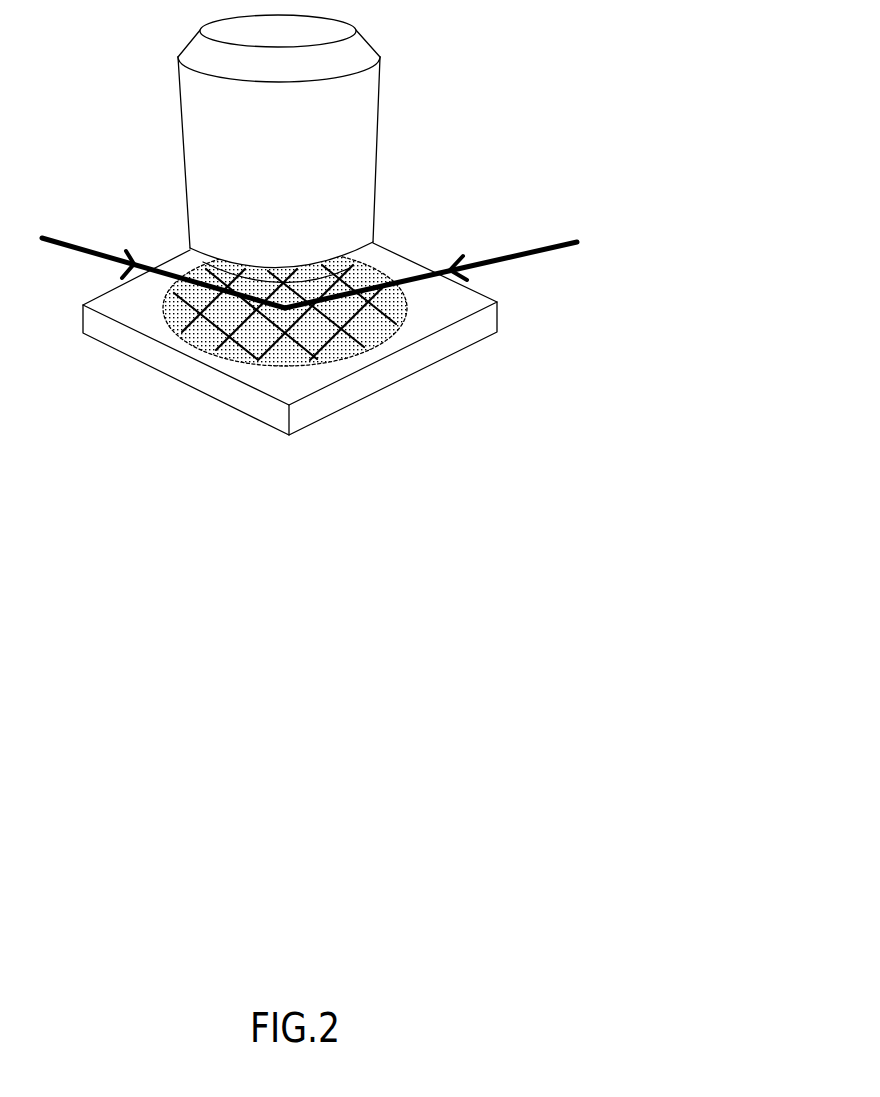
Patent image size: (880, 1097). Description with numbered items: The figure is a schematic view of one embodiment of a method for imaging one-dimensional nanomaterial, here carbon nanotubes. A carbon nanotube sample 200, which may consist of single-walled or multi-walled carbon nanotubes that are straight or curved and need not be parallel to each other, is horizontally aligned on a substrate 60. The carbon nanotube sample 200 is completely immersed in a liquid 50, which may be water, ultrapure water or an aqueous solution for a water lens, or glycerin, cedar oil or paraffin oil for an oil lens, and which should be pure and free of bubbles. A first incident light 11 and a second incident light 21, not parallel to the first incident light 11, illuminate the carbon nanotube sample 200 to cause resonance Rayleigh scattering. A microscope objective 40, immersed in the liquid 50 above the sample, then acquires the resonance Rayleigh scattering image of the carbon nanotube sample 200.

The first incident light 11 is at (105, 250).
The second incident light 21 is at (480, 260).
The microscope objective 40 is at (353, 110).
The liquid 50 is at (247, 355).
The substrate 60 is at (435, 345).
The carbon nanotube sample 200 is at (293, 345).